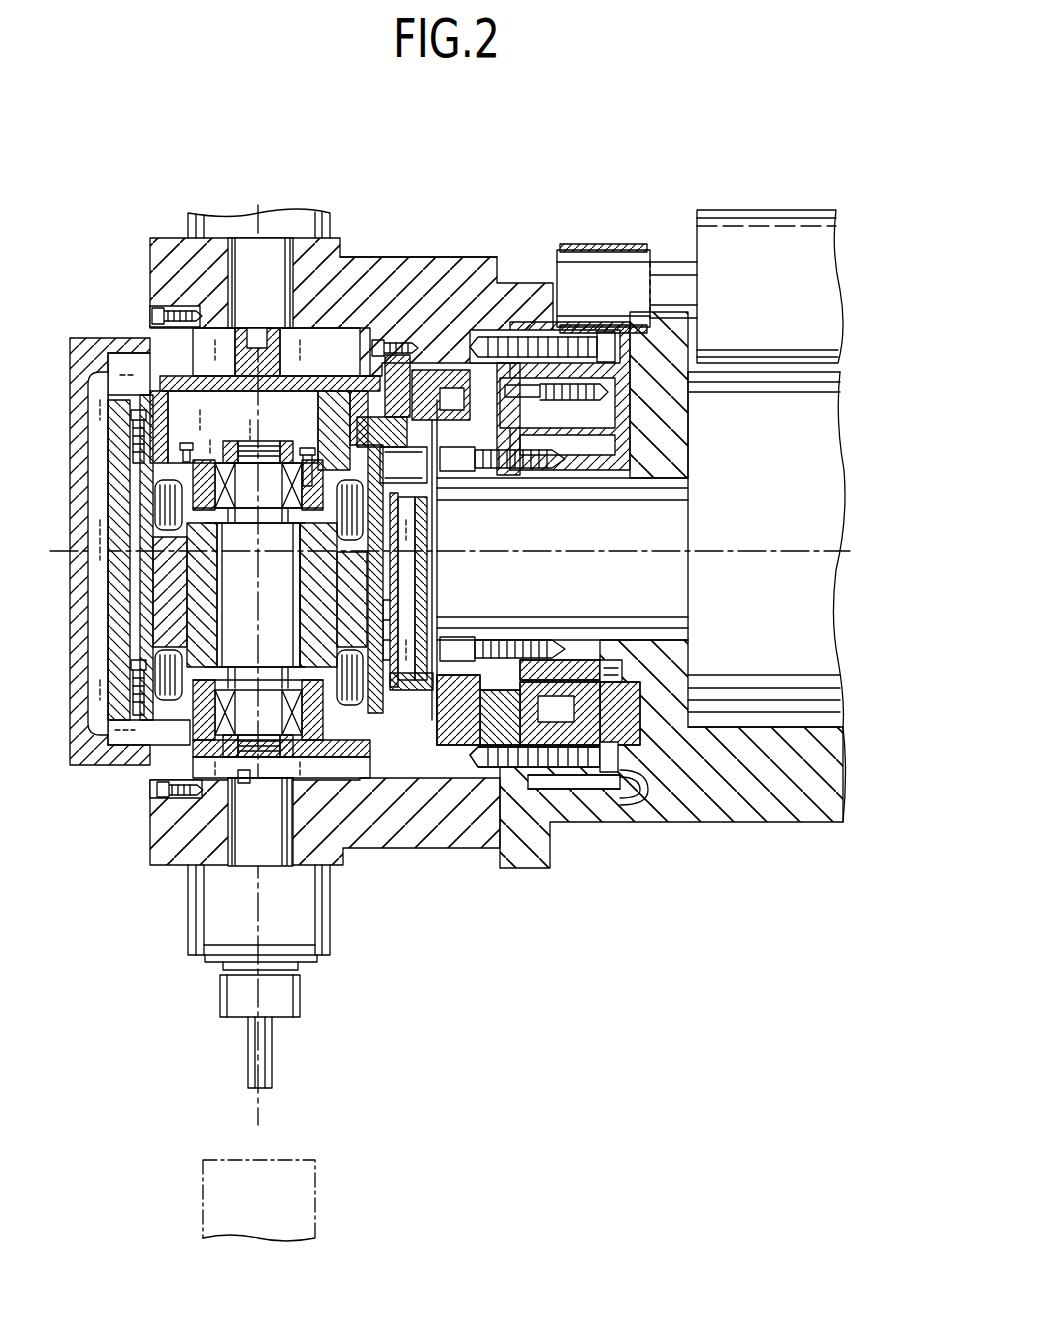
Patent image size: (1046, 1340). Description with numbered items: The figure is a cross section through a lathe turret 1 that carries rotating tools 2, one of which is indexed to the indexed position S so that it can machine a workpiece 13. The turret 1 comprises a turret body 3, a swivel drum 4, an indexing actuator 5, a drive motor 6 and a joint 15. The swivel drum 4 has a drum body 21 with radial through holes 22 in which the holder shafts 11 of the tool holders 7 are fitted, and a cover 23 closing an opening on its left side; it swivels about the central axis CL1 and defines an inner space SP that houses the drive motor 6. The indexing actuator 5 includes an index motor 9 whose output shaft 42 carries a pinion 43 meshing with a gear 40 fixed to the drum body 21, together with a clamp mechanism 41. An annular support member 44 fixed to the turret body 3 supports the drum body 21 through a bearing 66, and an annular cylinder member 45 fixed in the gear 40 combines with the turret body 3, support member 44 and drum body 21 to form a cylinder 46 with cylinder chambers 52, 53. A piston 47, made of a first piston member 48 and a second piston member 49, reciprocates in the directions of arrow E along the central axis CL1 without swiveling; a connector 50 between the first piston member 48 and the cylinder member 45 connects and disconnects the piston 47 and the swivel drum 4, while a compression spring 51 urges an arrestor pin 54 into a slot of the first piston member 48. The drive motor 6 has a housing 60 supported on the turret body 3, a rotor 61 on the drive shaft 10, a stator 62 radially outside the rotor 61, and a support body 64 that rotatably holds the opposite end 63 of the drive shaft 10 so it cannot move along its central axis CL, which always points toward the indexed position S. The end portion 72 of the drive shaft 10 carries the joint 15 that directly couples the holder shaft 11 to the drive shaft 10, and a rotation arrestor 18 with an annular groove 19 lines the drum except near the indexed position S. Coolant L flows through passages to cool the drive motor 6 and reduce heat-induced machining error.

The turret 1 is at (567, 170).
The rotating tool 2 is at (272, 1050).
The turret body 3 is at (760, 822).
The swivel drum 4 is at (378, 258).
The indexing actuator 5 is at (553, 285).
The drive motor 6 is at (130, 740).
The tool holder 7 is at (335, 215).
The index motor 9 is at (742, 212).
The drive shaft 10 is at (252, 619).
The holder shaft 11 is at (278, 850).
The workpiece 13 is at (318, 1205).
The joint 15 is at (246, 786).
The rotation arrestor 18 is at (330, 365).
The annular groove 19 is at (262, 326).
The drum body 21 is at (438, 257).
The radial through hole 22 is at (285, 818).
The cover 23 is at (105, 340).
The gear 40 is at (620, 792).
The clamp mechanism 41 is at (595, 697).
The output shaft 42 is at (672, 262).
The pinion 43 is at (590, 250).
The support member 44 is at (500, 468).
The cylinder member 45 is at (635, 700).
The cylinder 46 is at (620, 658).
The piston 47 is at (590, 660).
The first piston member 48 is at (465, 740).
The second piston member 49 is at (560, 713).
The connector 50 is at (458, 704).
The compression spring 51 is at (620, 393).
The cylinder chamber 52 is at (441, 405).
The cylinder chamber 53 is at (568, 652).
The arrestor pin 54 is at (478, 372).
The housing 60 is at (434, 604).
The rotor 61 is at (318, 563).
The stator 62 is at (366, 604).
The opposite end 63 is at (273, 500).
The support body 64 is at (343, 430).
The bearing 66 is at (420, 370).
The end portion 72 is at (273, 725).
The inner space SP is at (212, 330).
The central axis CL is at (262, 652).
The central axis CL1 is at (583, 548).
The coolant L is at (418, 571).
The arrow E is at (556, 431).
The indexed position S is at (258, 1138).